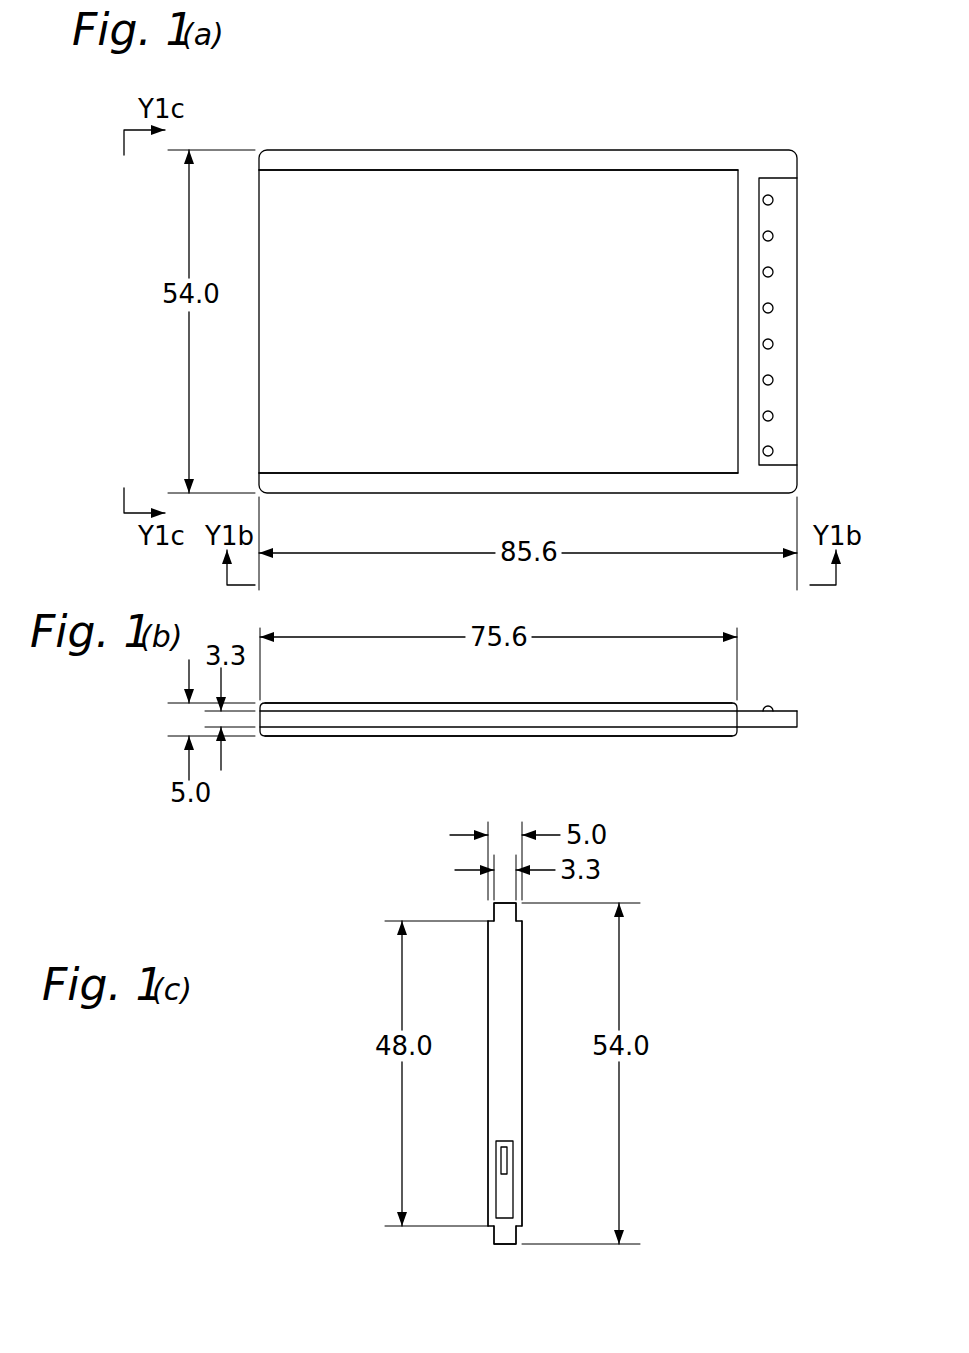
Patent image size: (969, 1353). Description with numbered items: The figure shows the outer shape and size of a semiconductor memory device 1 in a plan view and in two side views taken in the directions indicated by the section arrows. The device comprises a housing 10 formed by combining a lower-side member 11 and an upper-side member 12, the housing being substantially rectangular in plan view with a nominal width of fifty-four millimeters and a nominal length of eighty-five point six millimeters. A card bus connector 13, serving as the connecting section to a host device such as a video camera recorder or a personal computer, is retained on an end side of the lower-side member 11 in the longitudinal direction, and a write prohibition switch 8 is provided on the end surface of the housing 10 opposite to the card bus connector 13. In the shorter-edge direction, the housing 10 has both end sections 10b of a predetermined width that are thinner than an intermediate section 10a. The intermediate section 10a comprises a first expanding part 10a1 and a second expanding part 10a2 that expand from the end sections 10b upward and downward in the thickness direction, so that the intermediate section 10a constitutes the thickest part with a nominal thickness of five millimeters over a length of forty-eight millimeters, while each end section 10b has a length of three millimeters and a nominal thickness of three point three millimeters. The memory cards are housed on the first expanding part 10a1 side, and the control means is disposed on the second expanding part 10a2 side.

In FIG. 1A, the semiconductor memory device 1 is at (712, 140).
In FIG. 1B, the semiconductor memory device 1 is at (525, 731).
In FIG. 1C, the write prohibition switch 8 is at (507, 1160).
In FIG. 1A, the housing 10 is at (466, 315).
In FIG. 1B, the housing 10 is at (312, 745).
In FIG. 1A, the intermediate section 10a is at (276, 352).
In FIG. 1C, the intermediate section 10a is at (488, 1108).
In FIG. 1B, the first expanding part 10a1 is at (553, 703).
In FIG. 1B, the second expanding part 10a2 is at (500, 738).
In FIG. 1A, the end sections 10b is at (656, 162).
In FIG. 1C, the end sections 10b is at (490, 915).
In FIG. 1B, the lower-side member 11 is at (640, 703).
In FIG. 1C, the lower-side member 11 is at (488, 965).
In FIG. 1B, the upper-side member 12 is at (605, 738).
In FIG. 1C, the upper-side member 12 is at (522, 957).
In FIG. 1A, the card bus connector 13 is at (792, 290).